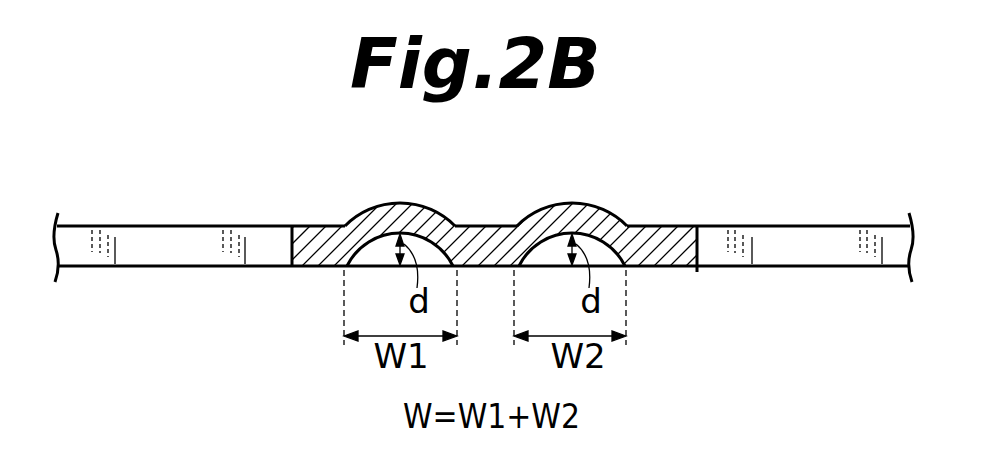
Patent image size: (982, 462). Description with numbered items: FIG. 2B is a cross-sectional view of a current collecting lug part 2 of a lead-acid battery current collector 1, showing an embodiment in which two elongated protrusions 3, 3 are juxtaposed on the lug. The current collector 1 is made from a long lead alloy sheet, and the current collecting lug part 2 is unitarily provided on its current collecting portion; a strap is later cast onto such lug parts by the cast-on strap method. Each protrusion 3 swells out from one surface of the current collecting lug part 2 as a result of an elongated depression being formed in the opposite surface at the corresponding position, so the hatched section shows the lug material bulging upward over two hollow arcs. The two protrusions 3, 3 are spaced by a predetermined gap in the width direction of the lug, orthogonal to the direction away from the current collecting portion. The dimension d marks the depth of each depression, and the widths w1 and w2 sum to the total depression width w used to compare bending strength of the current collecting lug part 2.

The current collector 1 is at (757, 238).
The current collecting lug part 2 is at (672, 254).
The protrusion 3 is at (403, 203).